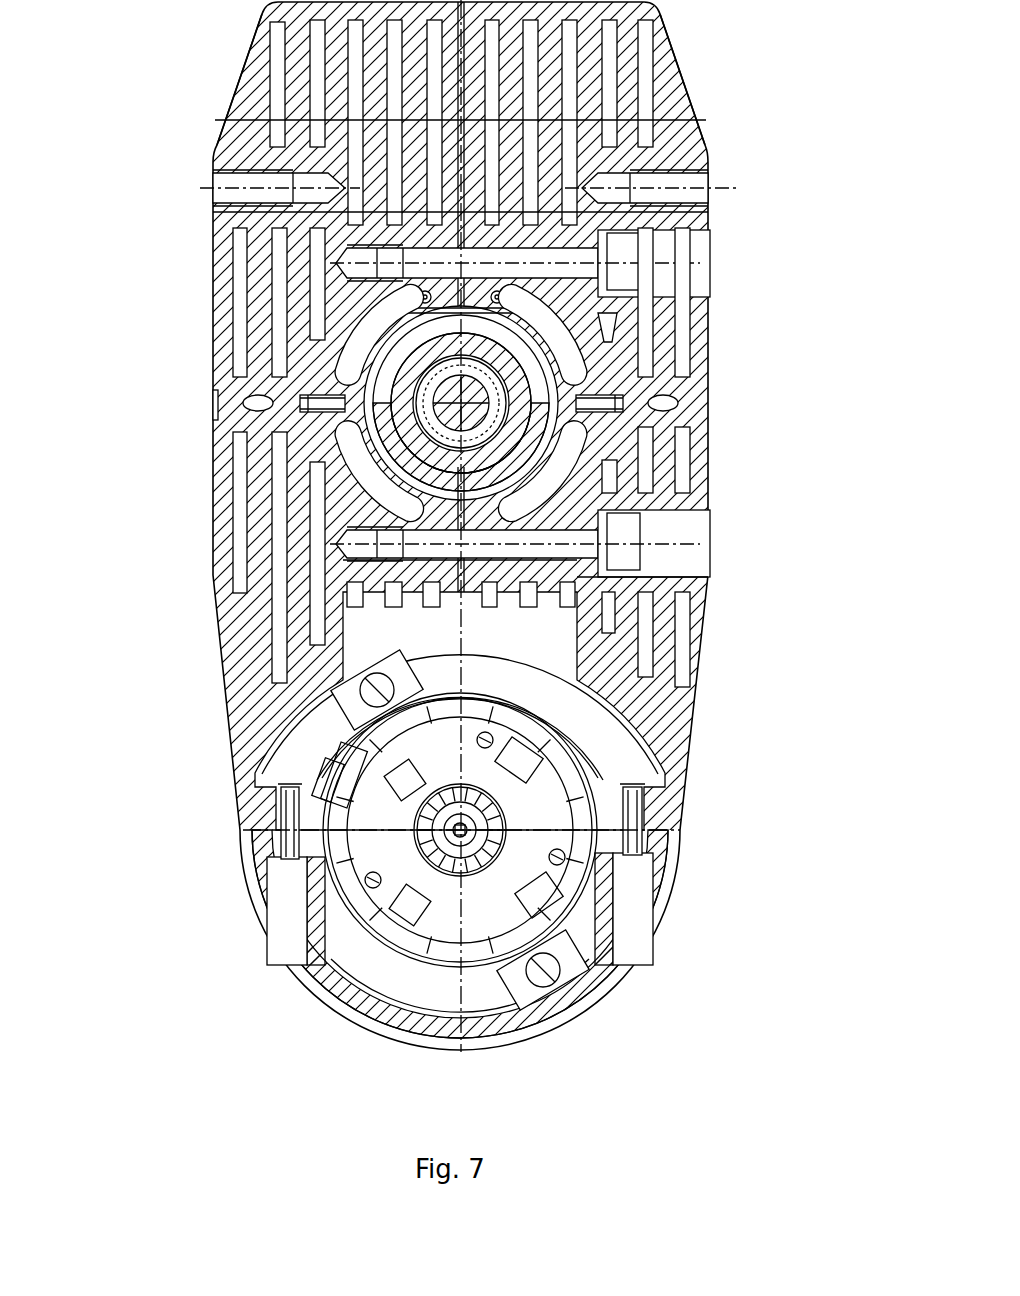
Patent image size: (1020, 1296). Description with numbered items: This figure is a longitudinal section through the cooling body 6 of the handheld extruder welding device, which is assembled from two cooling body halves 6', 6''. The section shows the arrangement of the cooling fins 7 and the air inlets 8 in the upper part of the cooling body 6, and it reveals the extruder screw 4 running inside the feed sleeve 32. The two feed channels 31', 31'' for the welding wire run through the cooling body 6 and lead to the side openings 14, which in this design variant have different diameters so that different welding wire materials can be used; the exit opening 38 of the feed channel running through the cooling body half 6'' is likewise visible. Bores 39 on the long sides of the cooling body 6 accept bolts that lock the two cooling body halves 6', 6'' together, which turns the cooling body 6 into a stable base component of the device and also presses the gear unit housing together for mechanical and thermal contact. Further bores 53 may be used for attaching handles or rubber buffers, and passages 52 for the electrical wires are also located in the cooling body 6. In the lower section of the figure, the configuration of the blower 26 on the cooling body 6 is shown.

The extruder screw 4 is at (425, 478).
The cooling body 6 is at (377, 526).
The cooling body half 6' is at (731, 79).
The cooling body half 6'' is at (179, 79).
The cooling fins 7 is at (234, 108).
The air inlets 8 is at (650, 105).
The side openings 14 is at (243, 404).
The blower 26 is at (560, 822).
The feed channel 31' is at (716, 312).
The feed channel 31'' is at (186, 324).
The feed sleeve 32 is at (480, 485).
The exit opening 38 is at (345, 400).
The bores 39 is at (692, 255).
The passages 52 is at (405, 297).
The bores 53 is at (213, 190).